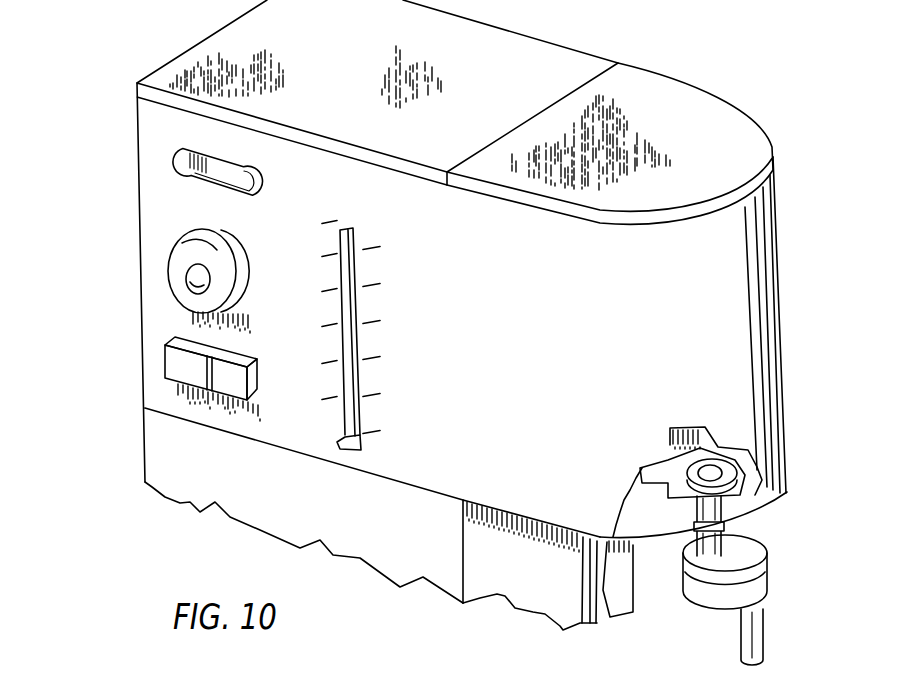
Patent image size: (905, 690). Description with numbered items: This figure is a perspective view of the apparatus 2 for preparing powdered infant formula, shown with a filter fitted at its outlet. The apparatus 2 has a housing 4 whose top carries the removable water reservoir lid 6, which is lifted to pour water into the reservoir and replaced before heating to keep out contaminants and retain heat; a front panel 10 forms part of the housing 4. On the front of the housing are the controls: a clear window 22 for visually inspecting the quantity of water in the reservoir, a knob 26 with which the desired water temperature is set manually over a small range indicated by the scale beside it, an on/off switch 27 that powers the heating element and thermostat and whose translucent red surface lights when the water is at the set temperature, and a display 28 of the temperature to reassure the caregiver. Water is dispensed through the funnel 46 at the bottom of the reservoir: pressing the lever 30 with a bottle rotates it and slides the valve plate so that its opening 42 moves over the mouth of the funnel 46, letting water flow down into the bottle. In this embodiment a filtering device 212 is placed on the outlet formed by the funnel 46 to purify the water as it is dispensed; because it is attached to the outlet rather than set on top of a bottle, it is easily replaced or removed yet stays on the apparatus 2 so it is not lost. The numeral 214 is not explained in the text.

The apparatus 2 is at (190, 22).
The housing 4 is at (137, 98).
The water reservoir lid 6 is at (707, 87).
The front panel 10 is at (531, 578).
The clear window 22 is at (358, 310).
The knob 26 is at (177, 265).
The on/off switch 27 is at (173, 360).
The display 28 is at (188, 177).
The lever 30 is at (617, 617).
The opening 42 is at (743, 502).
The funnel 46 is at (724, 510).
The filtering device 212 is at (768, 589).
The outlet tube 214 is at (764, 638).